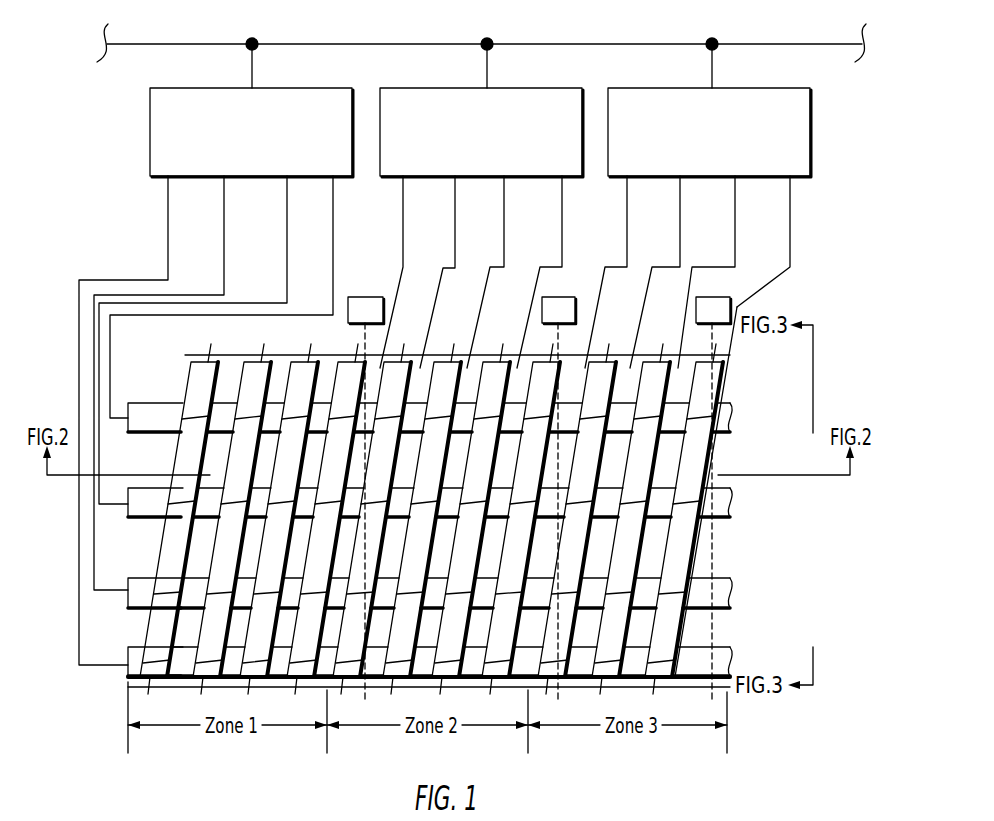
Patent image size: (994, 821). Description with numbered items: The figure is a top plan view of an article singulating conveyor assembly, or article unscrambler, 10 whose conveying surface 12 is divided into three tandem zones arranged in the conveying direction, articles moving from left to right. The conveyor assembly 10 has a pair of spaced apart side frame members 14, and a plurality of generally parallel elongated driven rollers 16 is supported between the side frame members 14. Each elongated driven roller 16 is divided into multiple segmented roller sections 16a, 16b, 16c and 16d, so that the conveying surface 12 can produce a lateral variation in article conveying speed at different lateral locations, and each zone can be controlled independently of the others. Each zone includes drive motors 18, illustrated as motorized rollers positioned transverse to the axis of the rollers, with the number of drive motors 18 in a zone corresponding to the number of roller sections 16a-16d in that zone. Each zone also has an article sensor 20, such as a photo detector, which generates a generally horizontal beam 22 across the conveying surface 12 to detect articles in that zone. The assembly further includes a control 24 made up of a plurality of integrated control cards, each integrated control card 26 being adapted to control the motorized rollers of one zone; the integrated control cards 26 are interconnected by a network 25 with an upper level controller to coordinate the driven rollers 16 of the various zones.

The article singulating conveyor assembly 10 is at (114, 208).
The conveying surface 12 is at (720, 545).
The side frame member 14 is at (229, 356).
The elongated driven roller 16 is at (186, 392).
The roller section 16a is at (690, 417).
The roller section 16b is at (720, 462).
The roller section 16c is at (700, 533).
The roller section 16d is at (680, 627).
The drive motor 18 is at (128, 403).
The article sensor 20 is at (352, 297).
The horizontal beam 22 is at (368, 340).
The control 24 is at (501, 118).
The network 25 is at (302, 44).
The integrated control card 26 is at (160, 88).